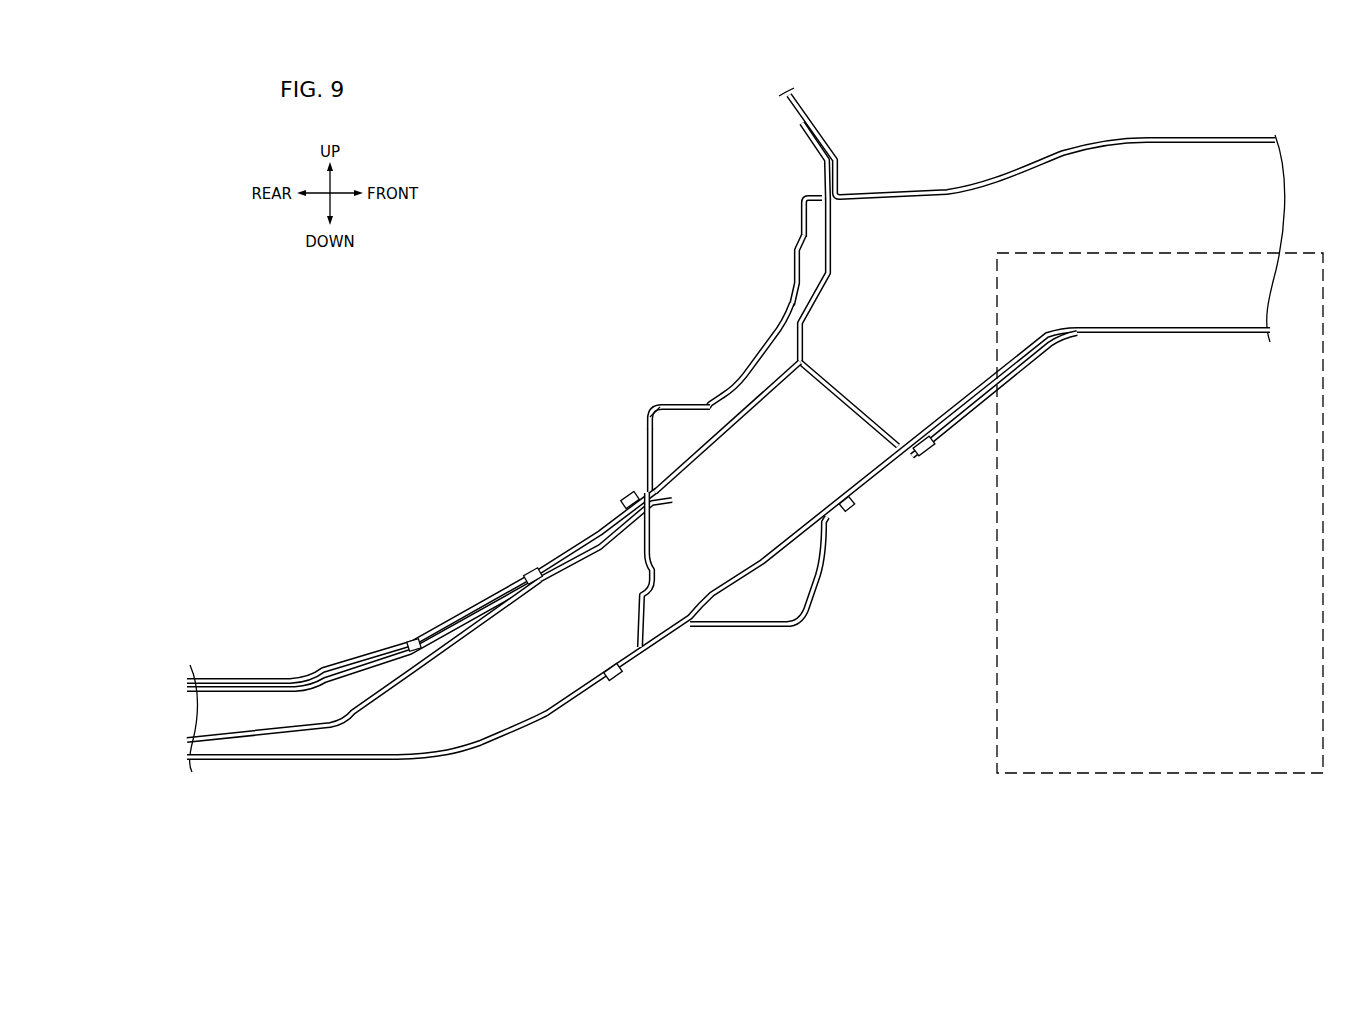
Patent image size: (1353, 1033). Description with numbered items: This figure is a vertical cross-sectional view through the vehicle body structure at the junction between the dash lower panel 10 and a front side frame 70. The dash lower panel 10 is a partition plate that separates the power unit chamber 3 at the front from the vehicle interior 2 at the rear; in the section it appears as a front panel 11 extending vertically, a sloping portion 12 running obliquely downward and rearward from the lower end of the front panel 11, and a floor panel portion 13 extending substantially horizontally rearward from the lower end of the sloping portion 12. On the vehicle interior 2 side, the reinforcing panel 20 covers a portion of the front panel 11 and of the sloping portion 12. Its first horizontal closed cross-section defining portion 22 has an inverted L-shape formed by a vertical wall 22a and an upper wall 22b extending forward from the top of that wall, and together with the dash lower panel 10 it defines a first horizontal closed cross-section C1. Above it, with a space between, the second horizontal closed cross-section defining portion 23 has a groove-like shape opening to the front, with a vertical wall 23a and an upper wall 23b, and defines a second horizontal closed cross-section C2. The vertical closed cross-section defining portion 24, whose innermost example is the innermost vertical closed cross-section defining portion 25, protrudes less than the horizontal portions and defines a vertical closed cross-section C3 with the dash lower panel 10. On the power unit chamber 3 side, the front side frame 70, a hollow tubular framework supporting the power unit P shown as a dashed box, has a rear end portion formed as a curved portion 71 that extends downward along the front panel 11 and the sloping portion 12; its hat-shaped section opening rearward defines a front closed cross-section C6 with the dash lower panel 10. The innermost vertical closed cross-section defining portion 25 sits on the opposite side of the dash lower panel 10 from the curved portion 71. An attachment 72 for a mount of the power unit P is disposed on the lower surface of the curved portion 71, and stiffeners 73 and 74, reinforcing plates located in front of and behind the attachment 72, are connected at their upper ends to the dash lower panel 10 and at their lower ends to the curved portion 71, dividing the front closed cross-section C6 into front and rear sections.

The vehicle interior 2 is at (503, 468).
The power unit chamber 3 is at (908, 560).
The dash lower panel 10 is at (816, 99).
The front panel 11 is at (814, 239).
The sloping portion 12 is at (583, 540).
The floor panel portion 13 is at (250, 727).
The reinforcing panel 20 is at (797, 140).
The first horizontal closed cross-section defining portion 22 is at (644, 425).
The vertical wall 22a is at (643, 462).
The upper wall 22b is at (663, 427).
The second horizontal closed cross-section defining portion 23 is at (774, 233).
The vertical wall 23a is at (794, 252).
The upper wall 23b is at (812, 191).
The vertical closed cross-section defining portion 24 is at (743, 363).
The innermost vertical closed cross-section defining portion 25 is at (737, 353).
The front side frame 70 is at (1176, 120).
The curved portion 71 is at (890, 470).
The attachment 72 is at (810, 590).
The stiffener 73 is at (863, 420).
The stiffener 74 is at (655, 572).
The first horizontal closed cross-section C1 is at (650, 418).
The second horizontal closed cross-section C2 is at (820, 250).
The vertical closed cross-section C3 is at (750, 387).
The front closed cross-section C6 is at (932, 407).
The power unit P is at (995, 698).